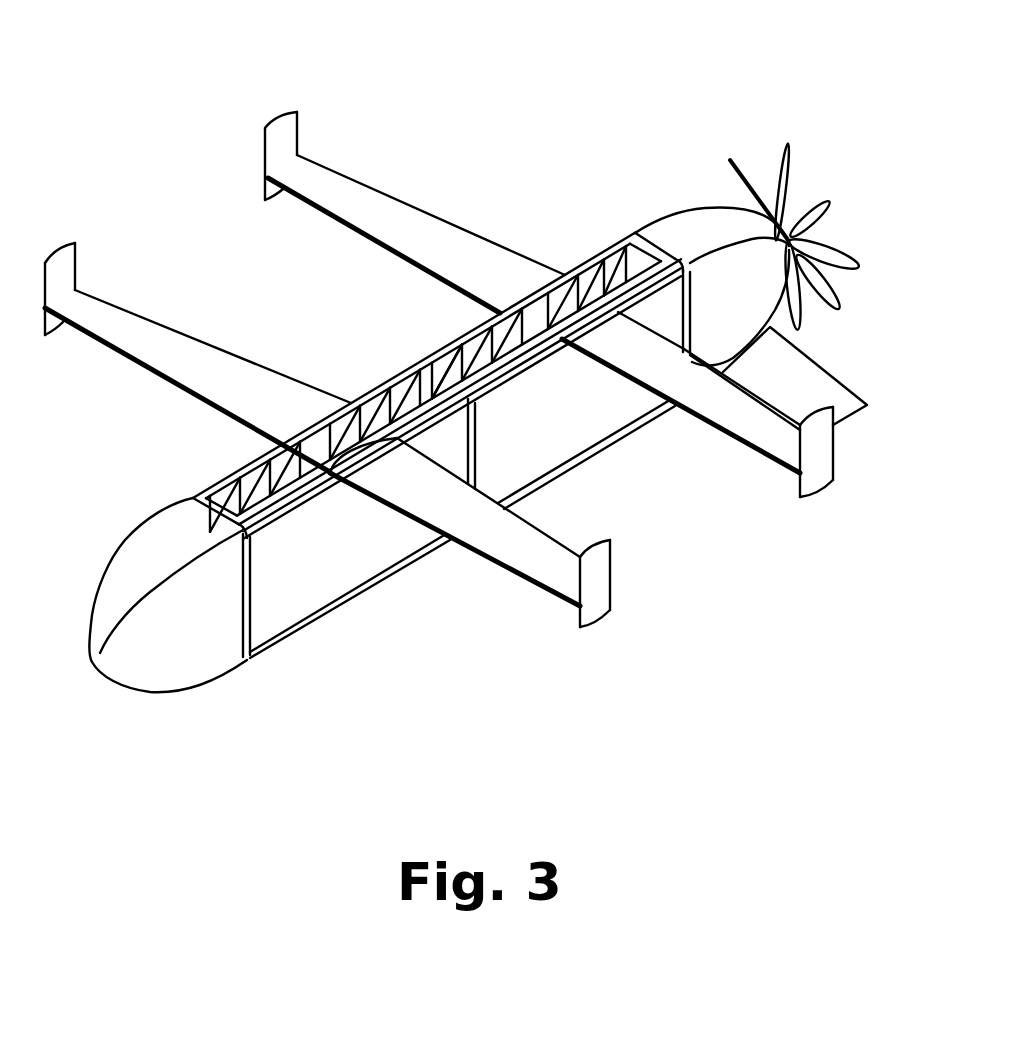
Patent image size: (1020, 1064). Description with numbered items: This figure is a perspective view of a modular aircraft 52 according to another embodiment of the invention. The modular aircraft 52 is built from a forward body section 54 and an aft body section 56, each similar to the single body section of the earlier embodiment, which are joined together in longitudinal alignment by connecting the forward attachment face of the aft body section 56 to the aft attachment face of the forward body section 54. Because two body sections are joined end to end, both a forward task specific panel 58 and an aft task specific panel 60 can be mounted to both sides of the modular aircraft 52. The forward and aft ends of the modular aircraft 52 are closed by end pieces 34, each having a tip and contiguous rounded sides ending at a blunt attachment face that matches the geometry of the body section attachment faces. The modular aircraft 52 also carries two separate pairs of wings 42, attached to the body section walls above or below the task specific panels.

The modular aircraft 52 is at (572, 106).
The end piece 34 is at (141, 565).
The wing 42 is at (149, 340).
The forward body section 54 is at (366, 395).
The aft body section 56 is at (453, 345).
The forward task specific panel 58 is at (311, 567).
The aft task specific panel 60 is at (608, 407).